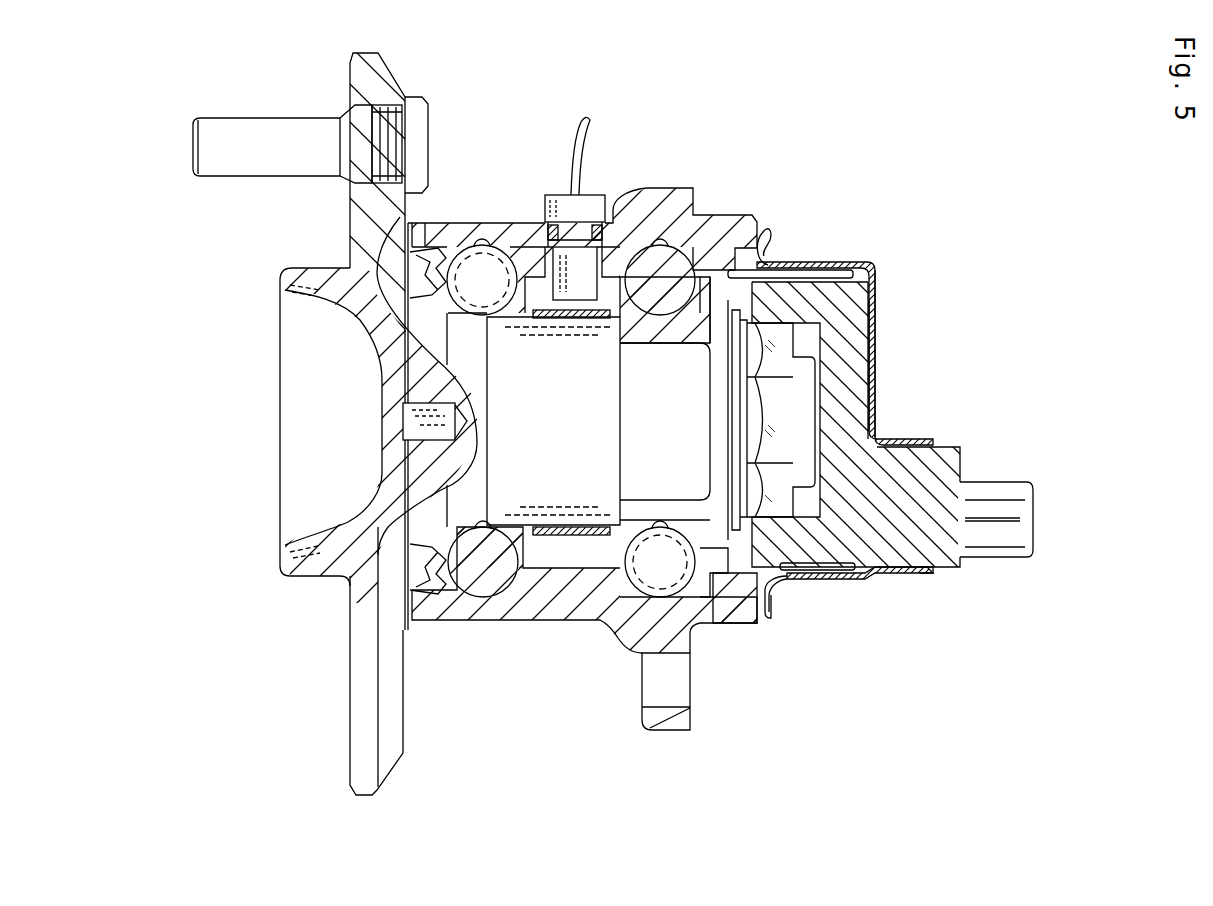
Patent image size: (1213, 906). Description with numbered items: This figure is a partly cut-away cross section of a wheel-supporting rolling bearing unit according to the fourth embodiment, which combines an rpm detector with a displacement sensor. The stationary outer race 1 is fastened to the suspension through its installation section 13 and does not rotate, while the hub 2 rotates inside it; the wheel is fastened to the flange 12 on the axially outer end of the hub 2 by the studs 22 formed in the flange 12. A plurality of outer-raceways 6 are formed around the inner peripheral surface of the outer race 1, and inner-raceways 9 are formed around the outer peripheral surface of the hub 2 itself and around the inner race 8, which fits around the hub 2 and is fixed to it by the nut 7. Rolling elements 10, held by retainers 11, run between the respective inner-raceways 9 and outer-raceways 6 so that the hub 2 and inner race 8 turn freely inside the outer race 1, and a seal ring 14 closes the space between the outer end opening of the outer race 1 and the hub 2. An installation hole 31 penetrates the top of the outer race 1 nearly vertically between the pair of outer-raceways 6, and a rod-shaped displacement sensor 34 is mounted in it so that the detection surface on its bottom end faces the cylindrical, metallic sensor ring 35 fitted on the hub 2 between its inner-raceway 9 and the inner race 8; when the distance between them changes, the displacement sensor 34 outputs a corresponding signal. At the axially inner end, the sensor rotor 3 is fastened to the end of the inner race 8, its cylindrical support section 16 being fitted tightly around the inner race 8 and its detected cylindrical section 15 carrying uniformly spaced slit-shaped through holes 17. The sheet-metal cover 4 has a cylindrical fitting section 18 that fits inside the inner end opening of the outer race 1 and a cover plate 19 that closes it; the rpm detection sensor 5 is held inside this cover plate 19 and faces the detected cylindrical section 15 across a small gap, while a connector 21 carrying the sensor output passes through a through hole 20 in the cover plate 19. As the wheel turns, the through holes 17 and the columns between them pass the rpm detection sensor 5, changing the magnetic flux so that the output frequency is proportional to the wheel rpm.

The outer race 1 is at (553, 614).
The hub 2 is at (305, 572).
The sensor rotor 3 is at (790, 272).
The cover 4 is at (880, 350).
The rpm detection sensor 5 is at (858, 400).
The outer-raceways 6 is at (470, 250).
The nut 7 is at (753, 367).
The inner race 8 is at (700, 550).
The inner-raceways 9 is at (487, 527).
The rolling elements 10 is at (432, 242).
The retainers 11 is at (655, 300).
The flange 12 is at (385, 72).
The installation section 13 is at (675, 718).
The seal ring 14 is at (405, 598).
The detected cylindrical section 15 is at (780, 573).
The cylindrical support section 16 is at (718, 275).
The through holes 17 is at (810, 268).
The cylindrical fitting section 18 is at (733, 603).
The cover plate 19 is at (875, 305).
The through hole 20 is at (912, 572).
The connector 21 is at (1000, 485).
The studs 22 is at (278, 125).
The installation hole 31 is at (590, 258).
The displacement sensor 34 is at (565, 262).
The sensor ring 35 is at (565, 318).